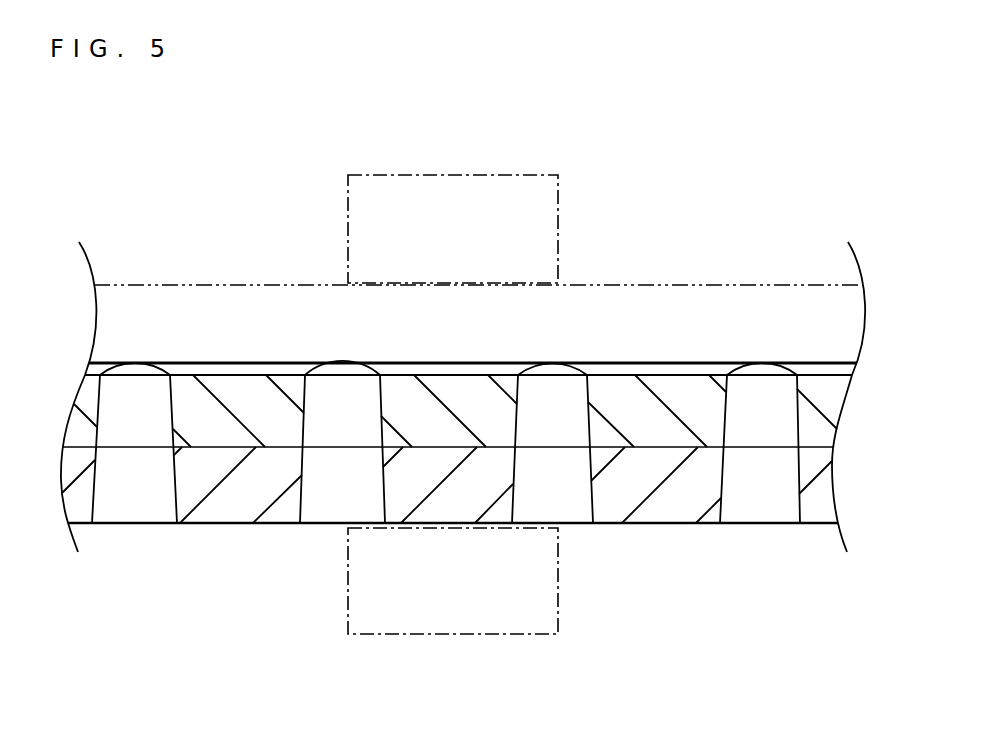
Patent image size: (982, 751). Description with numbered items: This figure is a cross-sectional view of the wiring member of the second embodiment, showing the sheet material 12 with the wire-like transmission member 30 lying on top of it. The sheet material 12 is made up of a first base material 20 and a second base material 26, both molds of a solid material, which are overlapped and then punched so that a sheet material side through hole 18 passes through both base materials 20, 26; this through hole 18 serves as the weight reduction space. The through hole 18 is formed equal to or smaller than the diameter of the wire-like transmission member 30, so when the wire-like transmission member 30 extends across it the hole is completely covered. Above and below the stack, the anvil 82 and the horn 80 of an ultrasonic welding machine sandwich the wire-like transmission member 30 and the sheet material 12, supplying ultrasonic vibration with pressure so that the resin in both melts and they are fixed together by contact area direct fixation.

The sheet material 12 is at (197, 525).
The sheet material side through hole 18 is at (318, 480).
The first base material 20 is at (633, 433).
The second base material 26 is at (677, 517).
The wire-like transmission member 30 is at (672, 283).
The horn 80 is at (460, 628).
The anvil 82 is at (453, 188).